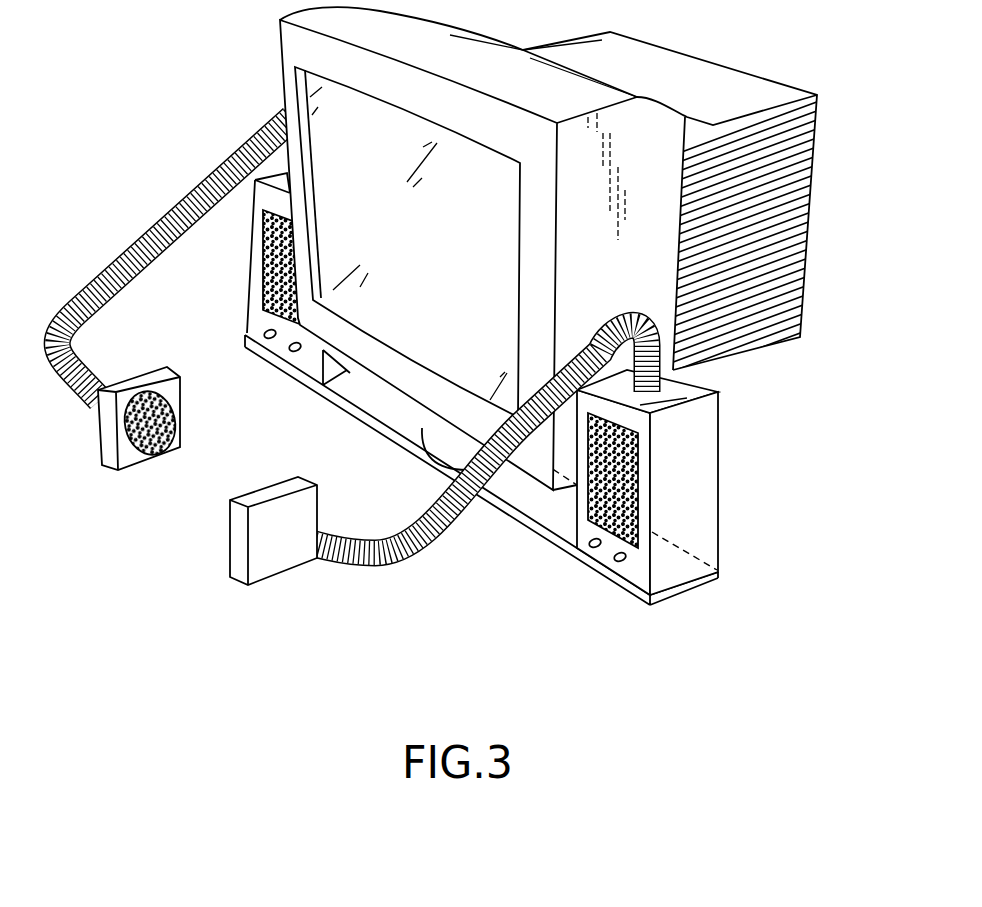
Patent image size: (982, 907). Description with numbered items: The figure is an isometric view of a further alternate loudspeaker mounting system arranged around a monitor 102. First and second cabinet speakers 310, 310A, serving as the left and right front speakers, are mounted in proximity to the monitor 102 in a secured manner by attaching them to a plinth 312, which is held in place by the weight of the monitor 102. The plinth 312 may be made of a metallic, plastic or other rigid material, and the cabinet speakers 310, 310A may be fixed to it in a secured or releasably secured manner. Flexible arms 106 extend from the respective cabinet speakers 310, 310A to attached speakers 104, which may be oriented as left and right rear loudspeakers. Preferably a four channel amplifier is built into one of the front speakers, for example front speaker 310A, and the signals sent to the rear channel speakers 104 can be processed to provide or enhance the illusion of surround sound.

The monitor 102 is at (440, 258).
The speakers 104 is at (185, 420).
The flexible arms 106 is at (203, 187).
The first cabinet speaker 310 is at (250, 265).
The second cabinet speaker 310A is at (720, 470).
The plinth 312 is at (347, 413).